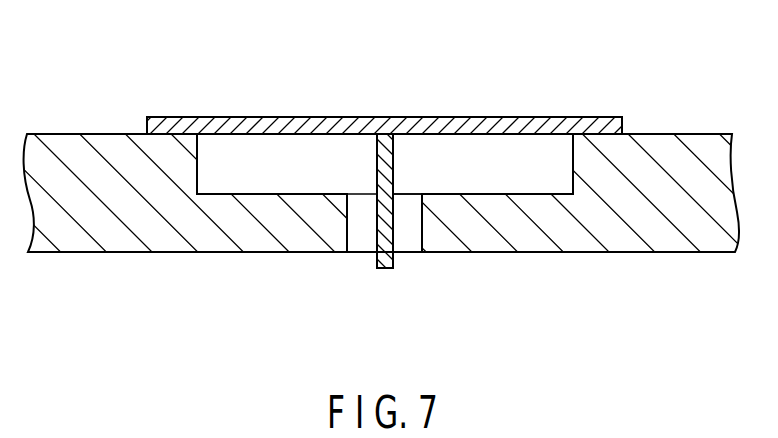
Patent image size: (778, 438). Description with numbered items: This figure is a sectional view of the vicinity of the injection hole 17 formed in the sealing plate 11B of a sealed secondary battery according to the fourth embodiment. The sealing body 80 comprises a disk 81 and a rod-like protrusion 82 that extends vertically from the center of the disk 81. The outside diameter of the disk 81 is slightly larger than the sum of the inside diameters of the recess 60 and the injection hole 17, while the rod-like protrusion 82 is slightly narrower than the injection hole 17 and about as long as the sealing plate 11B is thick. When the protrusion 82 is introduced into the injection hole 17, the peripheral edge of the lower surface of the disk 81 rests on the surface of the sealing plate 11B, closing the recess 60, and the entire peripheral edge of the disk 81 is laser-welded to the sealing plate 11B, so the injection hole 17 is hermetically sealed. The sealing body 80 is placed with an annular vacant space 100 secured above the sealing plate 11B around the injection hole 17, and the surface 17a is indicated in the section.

The sealing plate 11B is at (688, 134).
The sealing body 80 is at (242, 92).
The disk 81 is at (527, 117).
The injection hole 17 is at (410, 245).
The bottom surface of recess 17a is at (409, 194).
The rod-like protrusion 82 is at (362, 243).
The recess 60 is at (197, 173).
The annular vacant space 100 is at (313, 193).